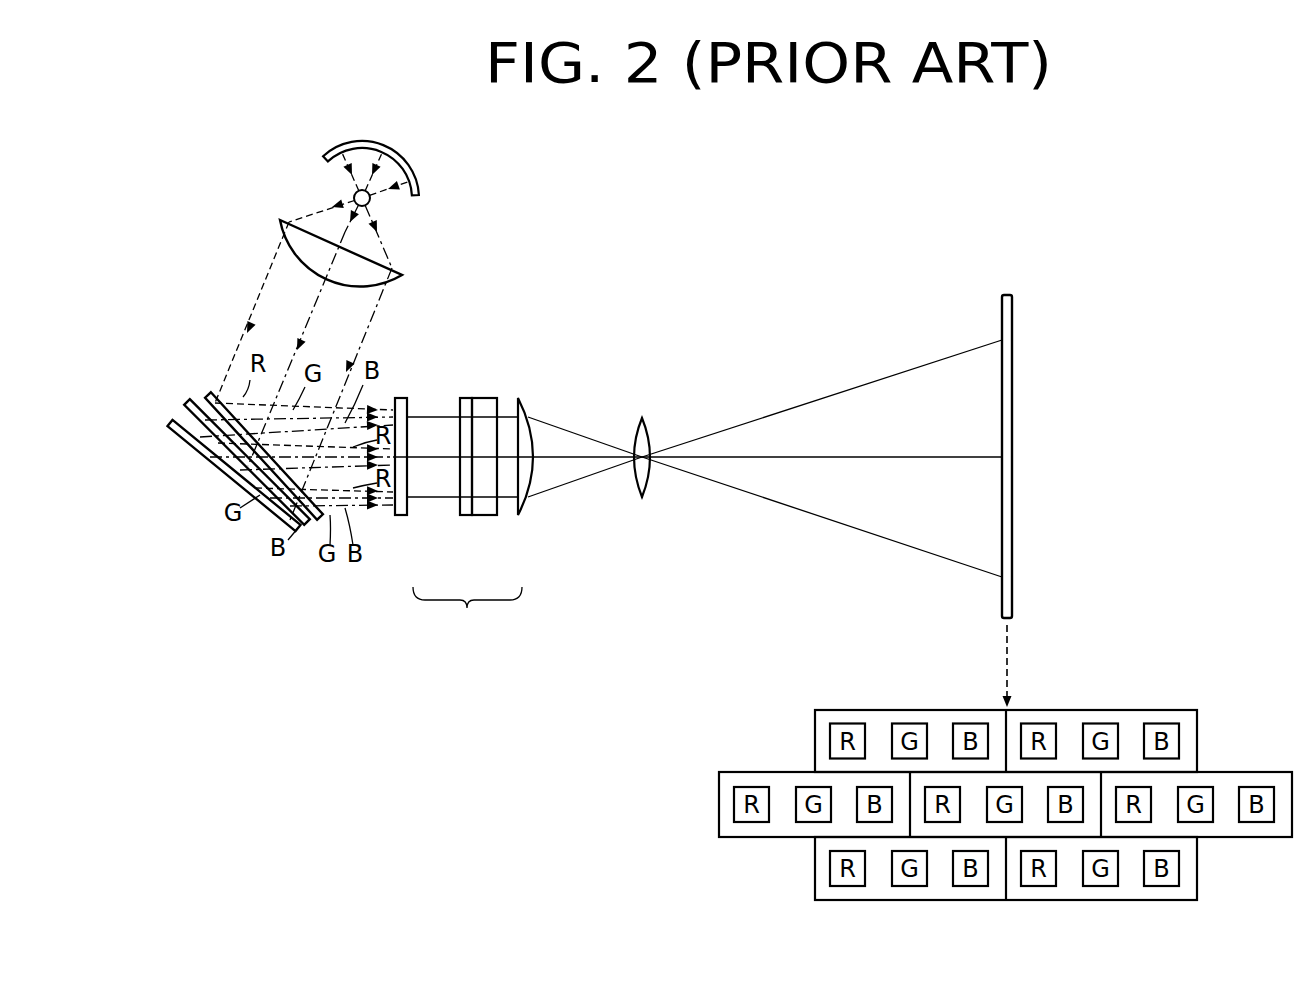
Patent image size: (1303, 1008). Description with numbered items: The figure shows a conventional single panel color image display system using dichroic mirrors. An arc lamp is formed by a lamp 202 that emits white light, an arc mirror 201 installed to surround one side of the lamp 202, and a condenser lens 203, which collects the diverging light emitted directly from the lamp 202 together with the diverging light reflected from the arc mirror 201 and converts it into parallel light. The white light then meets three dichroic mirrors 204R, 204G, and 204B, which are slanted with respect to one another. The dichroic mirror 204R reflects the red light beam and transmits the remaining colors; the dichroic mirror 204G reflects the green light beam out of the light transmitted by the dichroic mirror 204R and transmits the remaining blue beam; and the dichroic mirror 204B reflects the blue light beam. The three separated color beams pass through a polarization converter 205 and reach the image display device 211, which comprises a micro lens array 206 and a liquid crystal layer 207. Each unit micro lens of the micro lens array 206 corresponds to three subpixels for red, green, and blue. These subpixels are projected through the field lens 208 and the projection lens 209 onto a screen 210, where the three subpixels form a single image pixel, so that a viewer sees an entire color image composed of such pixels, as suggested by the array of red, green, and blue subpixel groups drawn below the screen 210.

The arc mirror 201 is at (402, 153).
The lamp 202 is at (370, 205).
The condenser lens 203 is at (393, 270).
The dichroic mirror 204R is at (212, 392).
The dichroic mirror 204G is at (192, 405).
The dichroic mirror 204B is at (173, 423).
The polarization converter 205 is at (405, 398).
The micro lens array 206 is at (465, 517).
The liquid crystal layer 207 is at (482, 517).
The field lens 208 is at (527, 398).
The projection lens 209 is at (642, 418).
The screen 210 is at (1007, 295).
The image display device 211 is at (467, 621).